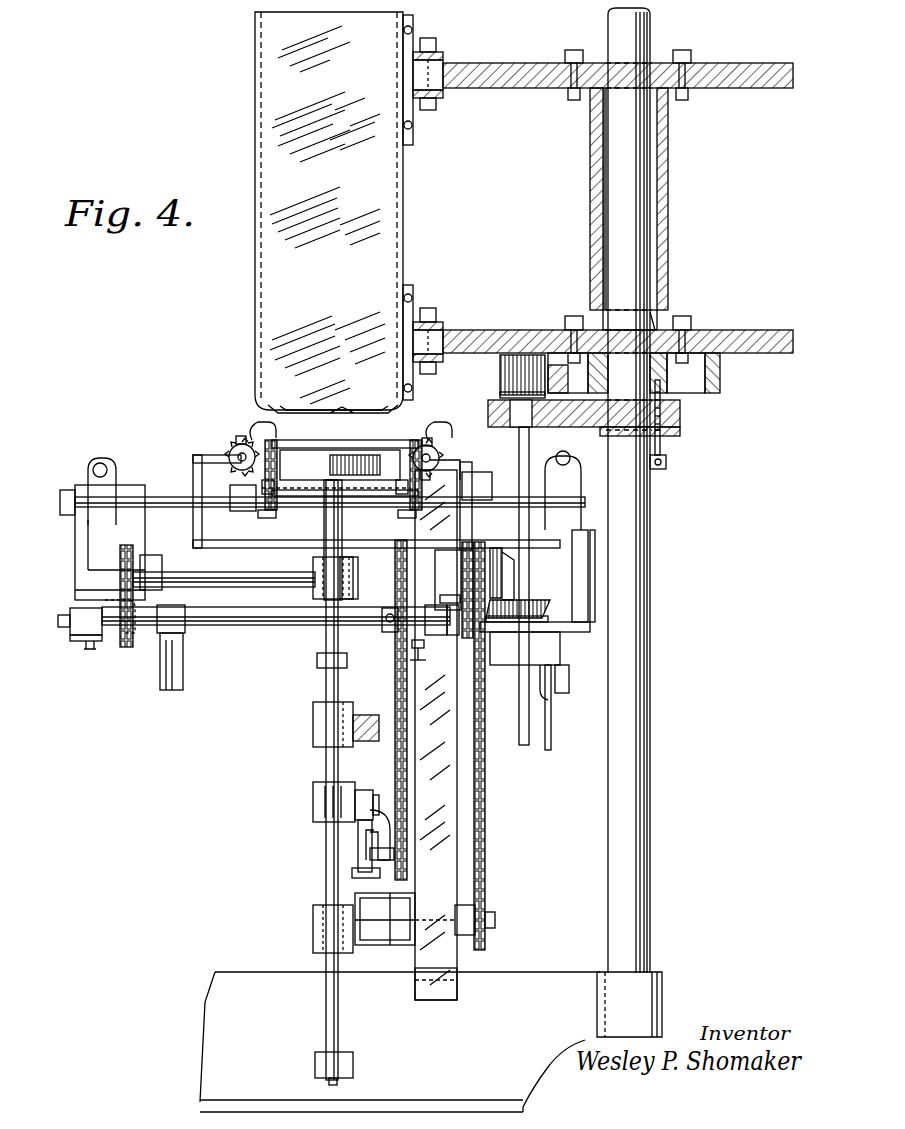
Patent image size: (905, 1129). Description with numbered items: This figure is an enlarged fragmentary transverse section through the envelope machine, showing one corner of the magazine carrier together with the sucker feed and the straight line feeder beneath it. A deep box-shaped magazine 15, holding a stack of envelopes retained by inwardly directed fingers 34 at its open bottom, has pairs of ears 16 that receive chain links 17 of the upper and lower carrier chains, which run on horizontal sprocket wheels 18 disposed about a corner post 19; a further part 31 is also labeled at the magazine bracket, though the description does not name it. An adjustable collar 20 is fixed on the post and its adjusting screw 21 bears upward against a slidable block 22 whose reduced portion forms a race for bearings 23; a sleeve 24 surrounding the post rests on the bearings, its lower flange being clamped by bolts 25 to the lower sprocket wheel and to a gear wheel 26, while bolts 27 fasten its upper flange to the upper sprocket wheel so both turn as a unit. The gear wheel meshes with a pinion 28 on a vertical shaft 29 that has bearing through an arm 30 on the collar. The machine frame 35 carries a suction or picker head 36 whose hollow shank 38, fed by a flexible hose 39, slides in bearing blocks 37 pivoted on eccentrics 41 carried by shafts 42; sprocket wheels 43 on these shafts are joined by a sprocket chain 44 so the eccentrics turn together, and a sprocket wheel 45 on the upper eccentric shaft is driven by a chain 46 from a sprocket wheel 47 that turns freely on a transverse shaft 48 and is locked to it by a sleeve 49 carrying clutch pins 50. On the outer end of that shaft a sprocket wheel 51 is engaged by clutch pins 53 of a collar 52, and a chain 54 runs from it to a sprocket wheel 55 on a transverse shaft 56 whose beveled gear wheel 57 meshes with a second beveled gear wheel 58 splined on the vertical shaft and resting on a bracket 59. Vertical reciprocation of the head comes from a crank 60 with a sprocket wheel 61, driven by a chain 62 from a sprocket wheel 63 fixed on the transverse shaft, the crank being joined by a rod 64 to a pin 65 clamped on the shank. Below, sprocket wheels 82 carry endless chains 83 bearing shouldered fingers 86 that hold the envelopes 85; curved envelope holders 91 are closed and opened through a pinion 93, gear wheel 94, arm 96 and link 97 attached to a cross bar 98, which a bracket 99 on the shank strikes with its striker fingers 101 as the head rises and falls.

The magazine 15 is at (258, 146).
The ears 16 is at (437, 52).
The chain links 17 is at (446, 62).
The sprocket wheels 18 is at (528, 86).
The post 19 is at (650, 636).
The adjustable collar 20 is at (668, 422).
The adjusting screw 21 is at (666, 455).
The slidable block 22 is at (672, 385).
The bearings 23 is at (655, 322).
The sleeve 24 is at (668, 282).
The bolts 25 is at (692, 322).
The gear wheel 26 is at (722, 372).
The bolts 27 is at (690, 65).
The pinion 28 is at (503, 372).
The vertical shaft 29 is at (519, 442).
The arm 30 is at (548, 426).
The bracket plate 31 is at (432, 108).
The fingers 34 is at (338, 405).
The frame 35 is at (452, 965).
The suction or picker head 36 is at (340, 460).
The bearing blocks 37 is at (312, 592).
The hollow shank 38 is at (324, 690).
The flexible hose 39 is at (366, 714).
The eccentrics 41 is at (385, 946).
The shafts 42 is at (436, 735).
The sprocket wheels 43 is at (495, 917).
The sprocket chain 44 is at (487, 797).
The sprocket wheel 45 is at (470, 545).
The chain 46 is at (462, 588).
The sprocket wheel 47 is at (440, 660).
The transverse shaft 48 is at (264, 626).
The sleeve 49 is at (415, 645).
The clutch pins 50 is at (442, 620).
The sprocket wheel 51 is at (125, 648).
The collar 52 is at (85, 641).
The clutch pins 53 is at (100, 604).
The chain 54 is at (150, 598).
The sprocket wheel 55 is at (124, 552).
The transverse shaft 56 is at (76, 540).
The beveled gear wheel 57 is at (505, 558).
The beveled gear wheel 58 is at (528, 600).
The bracket or support 59 is at (545, 668).
The crank 60 is at (375, 862).
The sprocket wheel 61 is at (408, 840).
The chain 62 is at (404, 752).
The sprocket wheel 63 is at (384, 628).
The rod 64 is at (372, 796).
The pin 65 is at (354, 788).
The sprocket wheels 82 is at (278, 478).
The endless chains 83 is at (262, 516).
The envelopes 85 is at (318, 444).
The fingers 86 is at (268, 438).
The envelope holders 91 is at (254, 428).
The pinion 93 is at (238, 440).
The gear wheel 94 is at (236, 468).
The arm 96 is at (200, 458).
The link 97 is at (196, 484).
The cross bar or tie-rod 98 is at (262, 548).
The shifting fork or bracket 99 is at (324, 634).
The striker fingers 101 is at (345, 556).